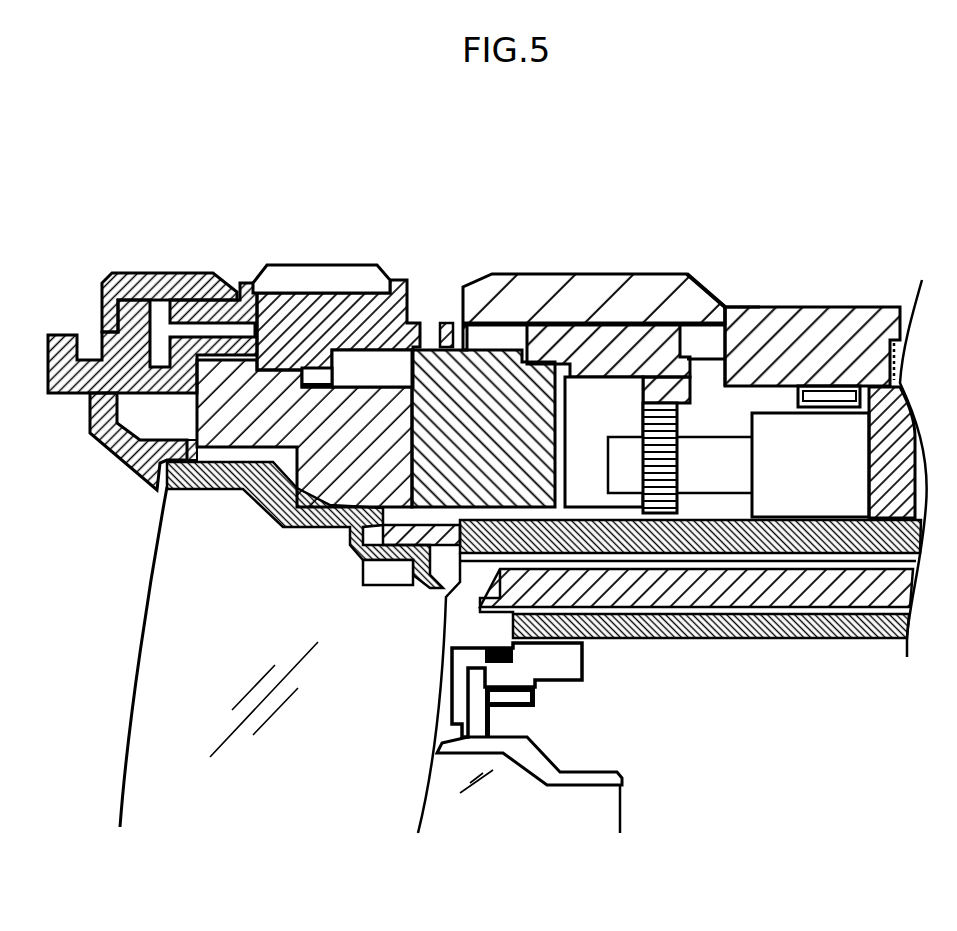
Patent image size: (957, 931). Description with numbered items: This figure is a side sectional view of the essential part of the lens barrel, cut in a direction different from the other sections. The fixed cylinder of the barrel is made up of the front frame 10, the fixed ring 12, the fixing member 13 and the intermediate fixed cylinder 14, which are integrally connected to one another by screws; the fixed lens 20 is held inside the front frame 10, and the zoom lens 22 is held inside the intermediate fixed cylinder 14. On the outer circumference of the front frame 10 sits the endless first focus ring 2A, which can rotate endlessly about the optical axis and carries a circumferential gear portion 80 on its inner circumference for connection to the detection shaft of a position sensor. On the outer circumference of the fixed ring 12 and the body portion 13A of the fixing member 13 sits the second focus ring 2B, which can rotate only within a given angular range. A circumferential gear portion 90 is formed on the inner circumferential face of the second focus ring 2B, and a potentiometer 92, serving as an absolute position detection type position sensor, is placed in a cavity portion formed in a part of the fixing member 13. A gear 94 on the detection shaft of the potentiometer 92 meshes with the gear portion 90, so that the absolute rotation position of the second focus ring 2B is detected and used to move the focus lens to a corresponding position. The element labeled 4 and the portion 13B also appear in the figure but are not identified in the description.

The camera module 4 is at (820, 333).
The first focus ring 2A is at (375, 330).
The second focus ring 2B is at (590, 347).
The front frame 10 is at (288, 395).
The fixed ring 12 is at (483, 400).
The fixing member 13 is at (737, 312).
The body portion 13A is at (623, 397).
The lens holder flange portion 13B is at (538, 300).
The intermediate fixed cylinder 14 is at (805, 523).
The fixed lens 20 is at (252, 609).
The zoom lens 22 is at (527, 829).
The gear portion 80 is at (353, 378).
The gear portion 90 is at (690, 355).
The potentiometer 92 is at (783, 483).
The gear 94 is at (660, 515).